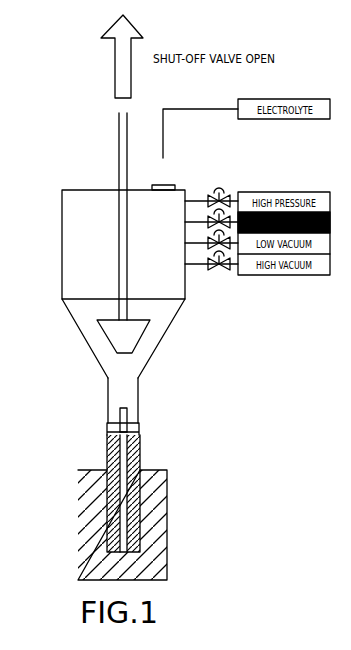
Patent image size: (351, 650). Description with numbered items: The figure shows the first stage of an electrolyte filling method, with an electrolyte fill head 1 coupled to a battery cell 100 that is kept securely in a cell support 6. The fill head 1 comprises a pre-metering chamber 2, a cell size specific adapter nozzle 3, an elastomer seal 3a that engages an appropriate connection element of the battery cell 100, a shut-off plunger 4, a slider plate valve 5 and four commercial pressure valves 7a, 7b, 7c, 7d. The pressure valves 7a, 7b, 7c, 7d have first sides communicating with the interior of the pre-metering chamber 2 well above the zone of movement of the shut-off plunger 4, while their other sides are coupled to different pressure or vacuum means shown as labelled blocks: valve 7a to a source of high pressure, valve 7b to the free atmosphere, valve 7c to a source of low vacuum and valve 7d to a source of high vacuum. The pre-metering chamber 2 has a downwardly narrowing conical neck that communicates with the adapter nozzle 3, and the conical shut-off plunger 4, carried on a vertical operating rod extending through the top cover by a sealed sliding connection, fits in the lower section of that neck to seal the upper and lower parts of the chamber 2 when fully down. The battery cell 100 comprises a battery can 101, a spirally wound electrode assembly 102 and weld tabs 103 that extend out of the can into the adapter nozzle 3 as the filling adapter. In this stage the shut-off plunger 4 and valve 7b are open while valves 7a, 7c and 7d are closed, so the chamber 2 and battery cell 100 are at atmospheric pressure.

The electrolyte fill head 1 is at (78, 348).
The pre-metering chamber 2 is at (175, 318).
The cell size specific adapter nozzle 3 is at (140, 409).
The elastomer seal 3a is at (140, 432).
The shut-off plunger 4 is at (123, 337).
The slider plate valve 5 is at (168, 183).
The cell support 6 is at (150, 517).
The pressure valve 7a is at (224, 190).
The pressure valve 7b is at (224, 212).
The pressure valve 7c is at (224, 236).
The pressure valve 7d is at (224, 257).
The battery cell 100 is at (103, 451).
The battery can 101 is at (105, 447).
The spirally wound electrode assembly 102 is at (110, 432).
The weld tabs 103 is at (117, 412).